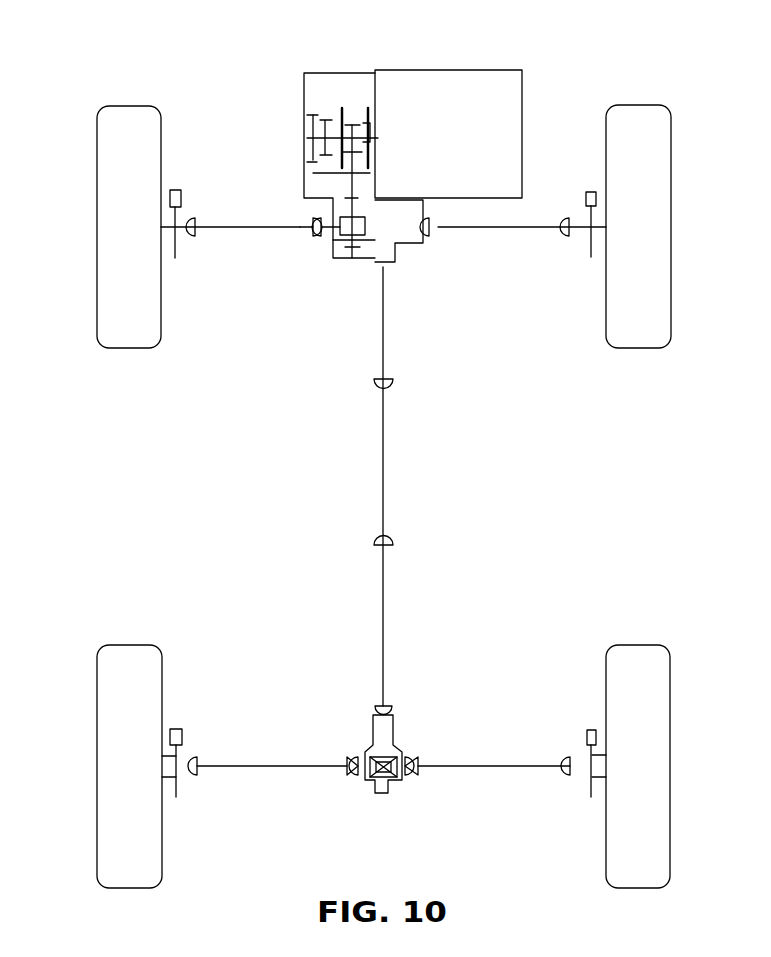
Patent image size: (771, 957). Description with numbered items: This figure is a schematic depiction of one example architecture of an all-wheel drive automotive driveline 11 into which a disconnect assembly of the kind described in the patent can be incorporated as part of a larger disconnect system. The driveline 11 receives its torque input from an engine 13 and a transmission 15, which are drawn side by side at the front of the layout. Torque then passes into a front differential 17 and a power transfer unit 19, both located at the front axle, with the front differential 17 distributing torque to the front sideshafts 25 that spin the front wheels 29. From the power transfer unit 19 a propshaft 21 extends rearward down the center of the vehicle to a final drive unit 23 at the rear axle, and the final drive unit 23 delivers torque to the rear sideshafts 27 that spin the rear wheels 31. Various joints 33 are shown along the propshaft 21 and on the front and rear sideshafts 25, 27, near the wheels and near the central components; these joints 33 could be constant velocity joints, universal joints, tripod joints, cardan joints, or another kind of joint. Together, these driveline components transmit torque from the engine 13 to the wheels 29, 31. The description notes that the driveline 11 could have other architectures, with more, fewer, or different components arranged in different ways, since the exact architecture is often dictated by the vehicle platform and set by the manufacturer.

The all-wheel drive automotive driveline 11 is at (547, 491).
The engine 13 is at (485, 93).
The transmission 15 is at (330, 93).
The front differential 17 is at (340, 265).
The power transfer unit 19 is at (407, 247).
The propshaft 21 is at (385, 460).
The final drive unit 23 is at (402, 737).
The front sideshafts 25 is at (235, 225).
The rear sideshafts 27 is at (258, 765).
The front wheels 29 is at (125, 317).
The rear wheels 31 is at (122, 775).
The joints 33 is at (187, 237).